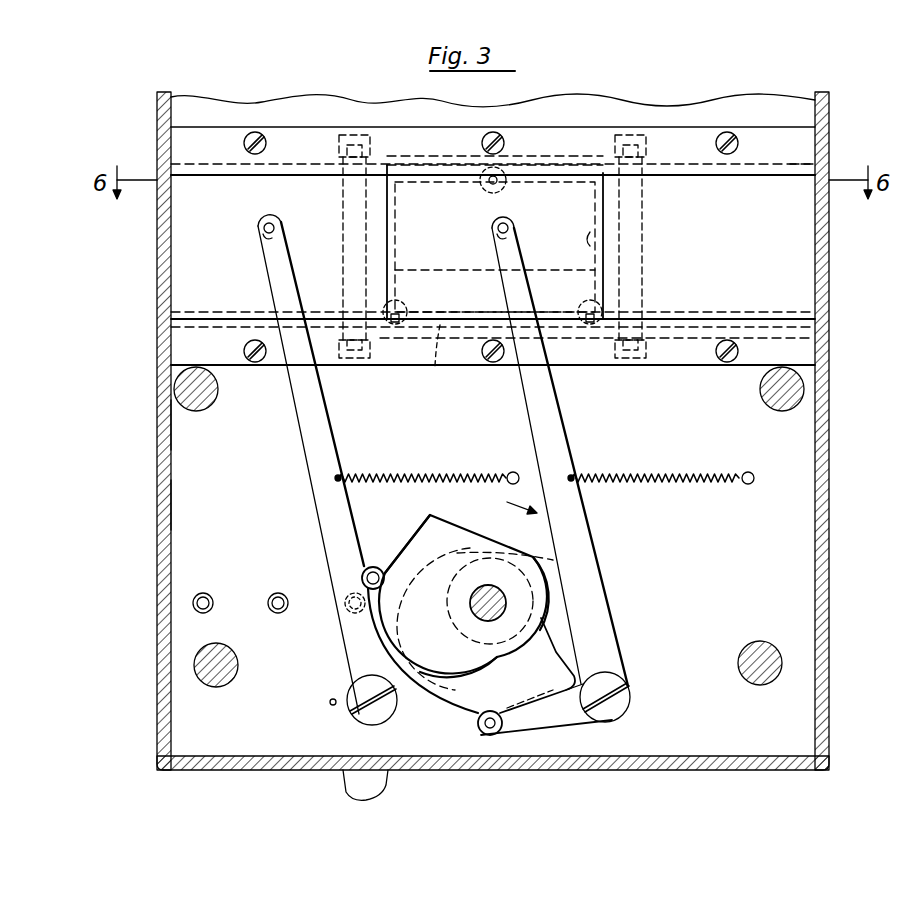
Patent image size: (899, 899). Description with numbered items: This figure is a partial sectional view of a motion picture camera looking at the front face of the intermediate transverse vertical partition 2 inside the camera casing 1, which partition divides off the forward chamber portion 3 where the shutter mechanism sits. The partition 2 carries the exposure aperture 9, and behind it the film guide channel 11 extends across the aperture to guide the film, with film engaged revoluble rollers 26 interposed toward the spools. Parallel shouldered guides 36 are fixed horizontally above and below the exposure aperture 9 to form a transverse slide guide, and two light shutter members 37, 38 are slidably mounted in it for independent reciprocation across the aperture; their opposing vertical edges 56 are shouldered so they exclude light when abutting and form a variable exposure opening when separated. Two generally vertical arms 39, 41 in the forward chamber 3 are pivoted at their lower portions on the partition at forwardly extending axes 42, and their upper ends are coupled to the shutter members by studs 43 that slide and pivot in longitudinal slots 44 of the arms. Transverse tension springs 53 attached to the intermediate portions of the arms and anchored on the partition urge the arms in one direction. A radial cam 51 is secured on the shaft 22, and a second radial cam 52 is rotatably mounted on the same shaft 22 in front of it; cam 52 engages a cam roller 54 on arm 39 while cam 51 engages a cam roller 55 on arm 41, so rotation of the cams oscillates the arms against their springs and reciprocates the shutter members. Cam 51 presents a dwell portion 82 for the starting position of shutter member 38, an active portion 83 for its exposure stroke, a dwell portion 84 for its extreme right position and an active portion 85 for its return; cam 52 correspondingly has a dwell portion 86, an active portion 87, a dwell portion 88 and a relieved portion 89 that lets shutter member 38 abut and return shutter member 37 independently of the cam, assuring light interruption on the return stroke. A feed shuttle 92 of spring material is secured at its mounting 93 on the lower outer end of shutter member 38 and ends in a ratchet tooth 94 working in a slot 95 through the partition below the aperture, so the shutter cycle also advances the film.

The camera casing 1 is at (162, 353).
The intermediate transverse vertical partition 2 is at (180, 426).
The forward chamber portion 3 is at (180, 508).
The exposure aperture 9 is at (613, 243).
The film guide channel 11 is at (812, 170).
The shaft 22 is at (477, 598).
The film engaged revoluble rollers 26 is at (336, 218).
The shouldered guides 36 is at (277, 171).
The light shutter member 37 is at (178, 265).
The light shutter member 38 is at (583, 273).
The arm 39 is at (303, 433).
The arm 41 is at (553, 418).
The pivotal axes 42 is at (353, 690).
The studs 43 is at (265, 223).
The longitudinal slots 44 is at (265, 240).
The radial cam 51 is at (553, 635).
The second radial cam 52 is at (420, 537).
The tension springs 53 is at (397, 470).
The cam roller 54 is at (363, 575).
The cam roller 55 is at (480, 720).
The opposing vertical edges 56 is at (387, 243).
The dwell portion 82 is at (447, 708).
The active portion 83 is at (573, 655).
The dwell portion 84 is at (558, 563).
The active portion 85 is at (472, 548).
The dwell portion 86 is at (397, 557).
The active portion 87 is at (463, 675).
The dwell portion 88 is at (550, 610).
The relieved portion 89 is at (457, 530).
The feed shuttle 92 is at (452, 311).
The mounting 93 is at (617, 320).
The ratchet tooth 94 is at (360, 313).
The slot 95 is at (442, 360).